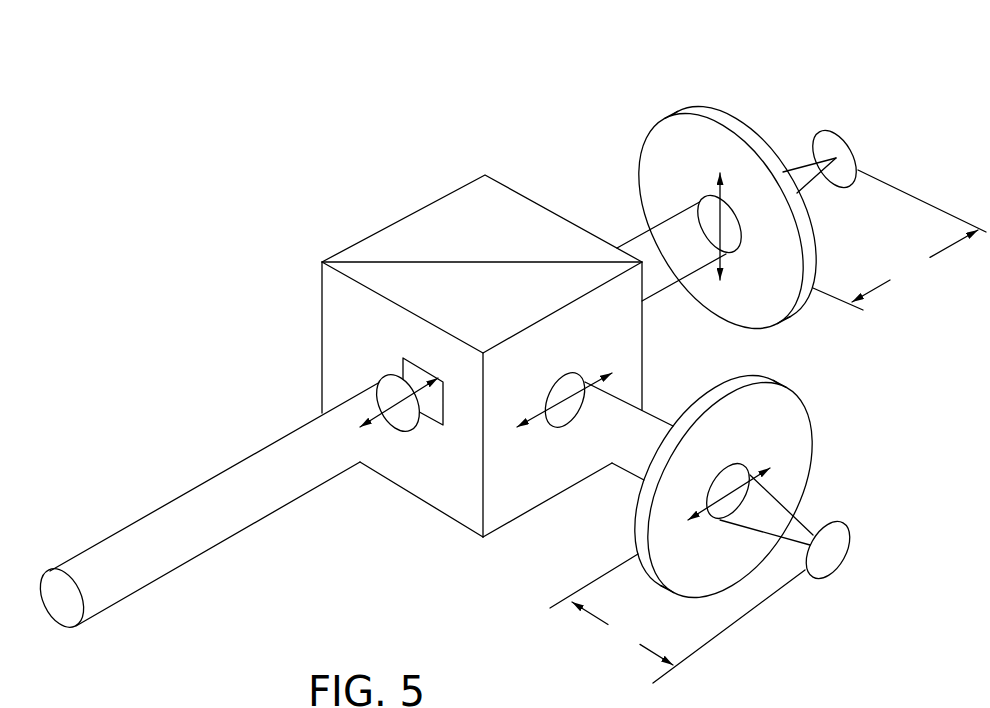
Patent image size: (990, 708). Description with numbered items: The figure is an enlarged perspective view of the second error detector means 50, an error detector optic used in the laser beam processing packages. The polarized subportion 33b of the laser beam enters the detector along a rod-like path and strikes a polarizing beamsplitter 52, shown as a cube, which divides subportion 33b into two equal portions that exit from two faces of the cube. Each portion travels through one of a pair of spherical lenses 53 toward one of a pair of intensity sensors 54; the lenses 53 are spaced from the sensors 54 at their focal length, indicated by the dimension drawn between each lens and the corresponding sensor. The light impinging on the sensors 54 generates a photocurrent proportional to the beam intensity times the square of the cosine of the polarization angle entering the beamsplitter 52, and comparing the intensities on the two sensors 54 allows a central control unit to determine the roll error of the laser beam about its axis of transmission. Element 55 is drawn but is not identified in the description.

The second error detector means 50 is at (483, 125).
The subportion of the laser beam 33b is at (198, 525).
The polarizing beamsplitter 52 is at (547, 225).
The spherical lenses 53 is at (795, 423).
The intensity sensors 54 is at (842, 545).
The detector / focal point 55 is at (822, 576).